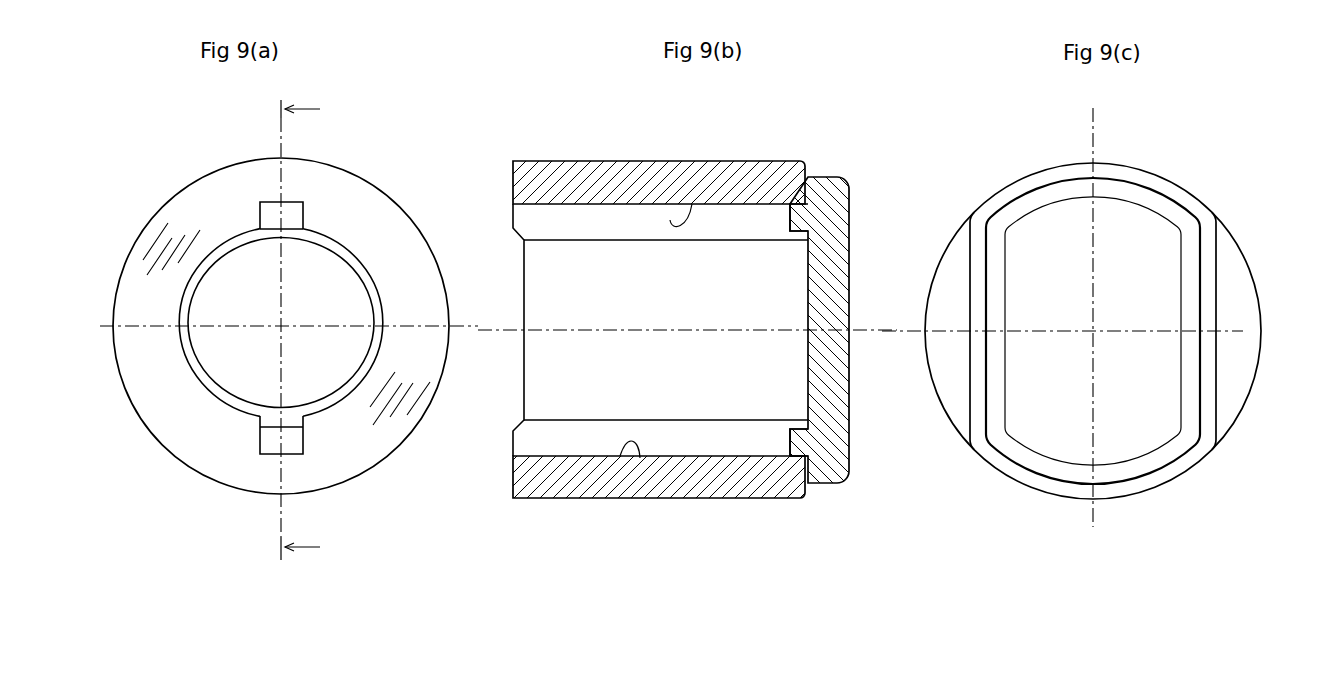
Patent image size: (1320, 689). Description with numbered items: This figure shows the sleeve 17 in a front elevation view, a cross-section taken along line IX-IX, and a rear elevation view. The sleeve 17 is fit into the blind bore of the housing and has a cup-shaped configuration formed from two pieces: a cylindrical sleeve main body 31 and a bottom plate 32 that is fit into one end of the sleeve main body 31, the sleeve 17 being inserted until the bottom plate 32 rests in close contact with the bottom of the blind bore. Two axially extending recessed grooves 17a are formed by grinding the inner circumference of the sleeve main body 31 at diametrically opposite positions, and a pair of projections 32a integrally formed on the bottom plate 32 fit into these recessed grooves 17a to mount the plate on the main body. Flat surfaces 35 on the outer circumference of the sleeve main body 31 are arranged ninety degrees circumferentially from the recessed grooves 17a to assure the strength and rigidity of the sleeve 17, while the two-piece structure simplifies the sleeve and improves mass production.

In FIG. 9A, the sleeve 17 is at (213, 167).
In FIG. 9B, the sleeve 17 is at (623, 142).
In FIG. 9C, the sleeve 17 is at (1035, 162).
In FIG. 9A, the recessed grooves 17a is at (293, 205).
In FIG. 9B, the recessed grooves 17a is at (670, 220).
In FIG. 9A, the sleeve main body 31 is at (387, 217).
In FIG. 9B, the sleeve main body 31 is at (737, 175).
In FIG. 9B, the bottom plate 32 is at (832, 190).
In FIG. 9C, the bottom plate 32 is at (1153, 202).
In FIG. 9B, the projections 32a is at (797, 213).
In FIG. 9C, the flat surfaces 35 is at (970, 353).